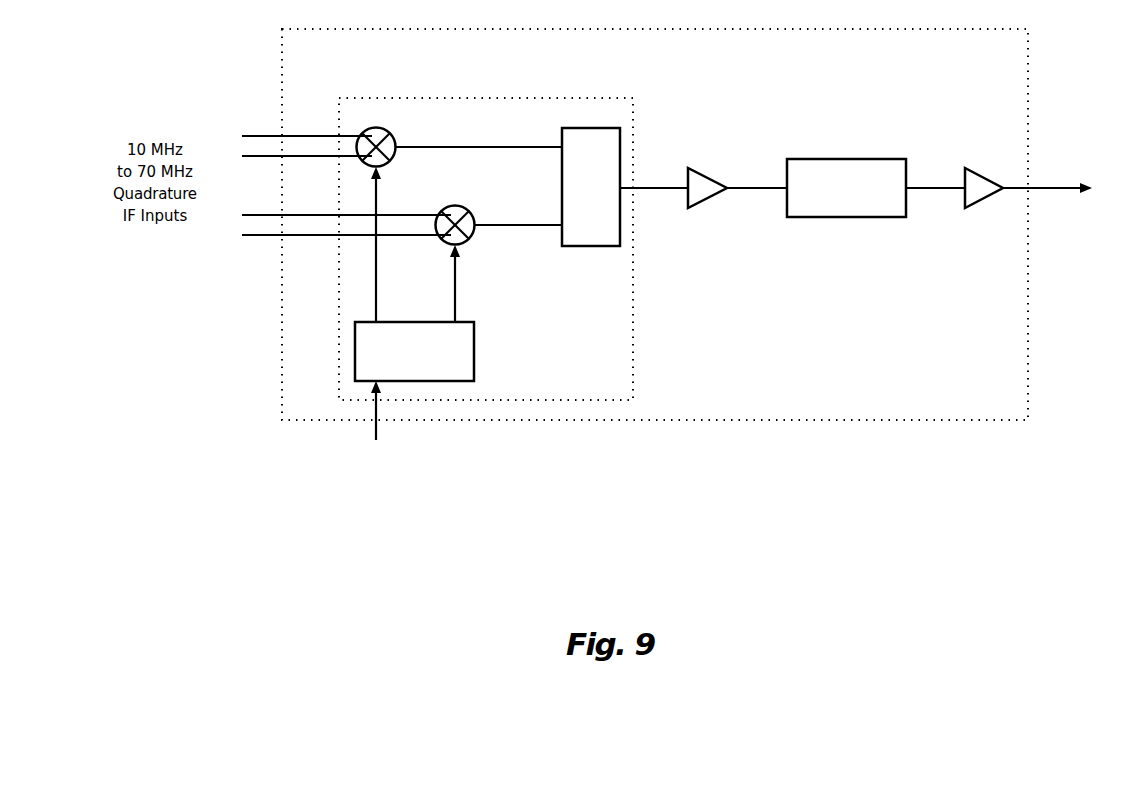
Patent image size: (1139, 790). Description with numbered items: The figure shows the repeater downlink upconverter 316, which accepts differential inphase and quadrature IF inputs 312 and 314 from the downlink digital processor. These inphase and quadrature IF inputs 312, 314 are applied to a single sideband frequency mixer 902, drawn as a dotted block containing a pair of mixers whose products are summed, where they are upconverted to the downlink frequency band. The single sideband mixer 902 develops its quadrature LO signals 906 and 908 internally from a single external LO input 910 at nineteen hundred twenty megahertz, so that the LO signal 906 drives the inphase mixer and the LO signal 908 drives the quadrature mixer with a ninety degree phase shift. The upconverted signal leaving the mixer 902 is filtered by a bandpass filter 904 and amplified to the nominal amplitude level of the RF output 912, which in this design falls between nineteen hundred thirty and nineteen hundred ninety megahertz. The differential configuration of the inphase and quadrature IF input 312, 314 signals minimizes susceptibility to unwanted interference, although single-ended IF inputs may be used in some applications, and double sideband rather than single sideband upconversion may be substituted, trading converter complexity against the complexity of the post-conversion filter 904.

The downlink upconverter 316 is at (275, 58).
The single sideband frequency mixer 902 is at (332, 108).
The inphase IF input 312 is at (252, 127).
The quadrature IF input 314 is at (253, 243).
The quadrature LO signal 906 is at (378, 273).
The quadrature LO signal 908 is at (455, 273).
The 1920 MHz LO input 910 is at (388, 430).
The bandpass filter 904 is at (861, 150).
The RF output 912 is at (1065, 202).